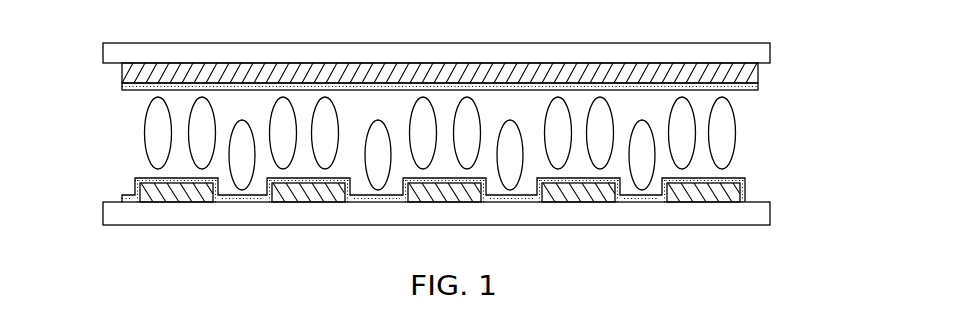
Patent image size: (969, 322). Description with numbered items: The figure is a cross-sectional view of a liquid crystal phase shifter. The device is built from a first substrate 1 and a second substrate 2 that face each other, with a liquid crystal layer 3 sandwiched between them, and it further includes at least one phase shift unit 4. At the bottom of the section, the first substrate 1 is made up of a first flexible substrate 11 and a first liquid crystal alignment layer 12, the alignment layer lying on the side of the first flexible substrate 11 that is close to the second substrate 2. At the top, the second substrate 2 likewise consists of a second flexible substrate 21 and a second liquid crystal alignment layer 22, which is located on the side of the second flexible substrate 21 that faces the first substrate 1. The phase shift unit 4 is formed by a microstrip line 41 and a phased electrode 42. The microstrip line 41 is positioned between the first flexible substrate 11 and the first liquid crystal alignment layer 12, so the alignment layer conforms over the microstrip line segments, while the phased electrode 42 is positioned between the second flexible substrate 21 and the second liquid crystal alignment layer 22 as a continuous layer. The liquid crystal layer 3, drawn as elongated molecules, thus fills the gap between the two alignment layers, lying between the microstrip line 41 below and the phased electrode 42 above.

The first substrate 1 is at (838, 166).
The first flexible substrate 11 is at (757, 215).
The first liquid crystal alignment layer 12 is at (755, 198).
The second substrate 2 is at (838, 36).
The second flexible substrate 21 is at (750, 52).
The second liquid crystal alignment layer 22 is at (760, 83).
The liquid crystal layer 3 is at (734, 136).
The phase shift unit 4 is at (60, 90).
The microstrip line 41 is at (137, 180).
The phased electrode 42 is at (135, 73).